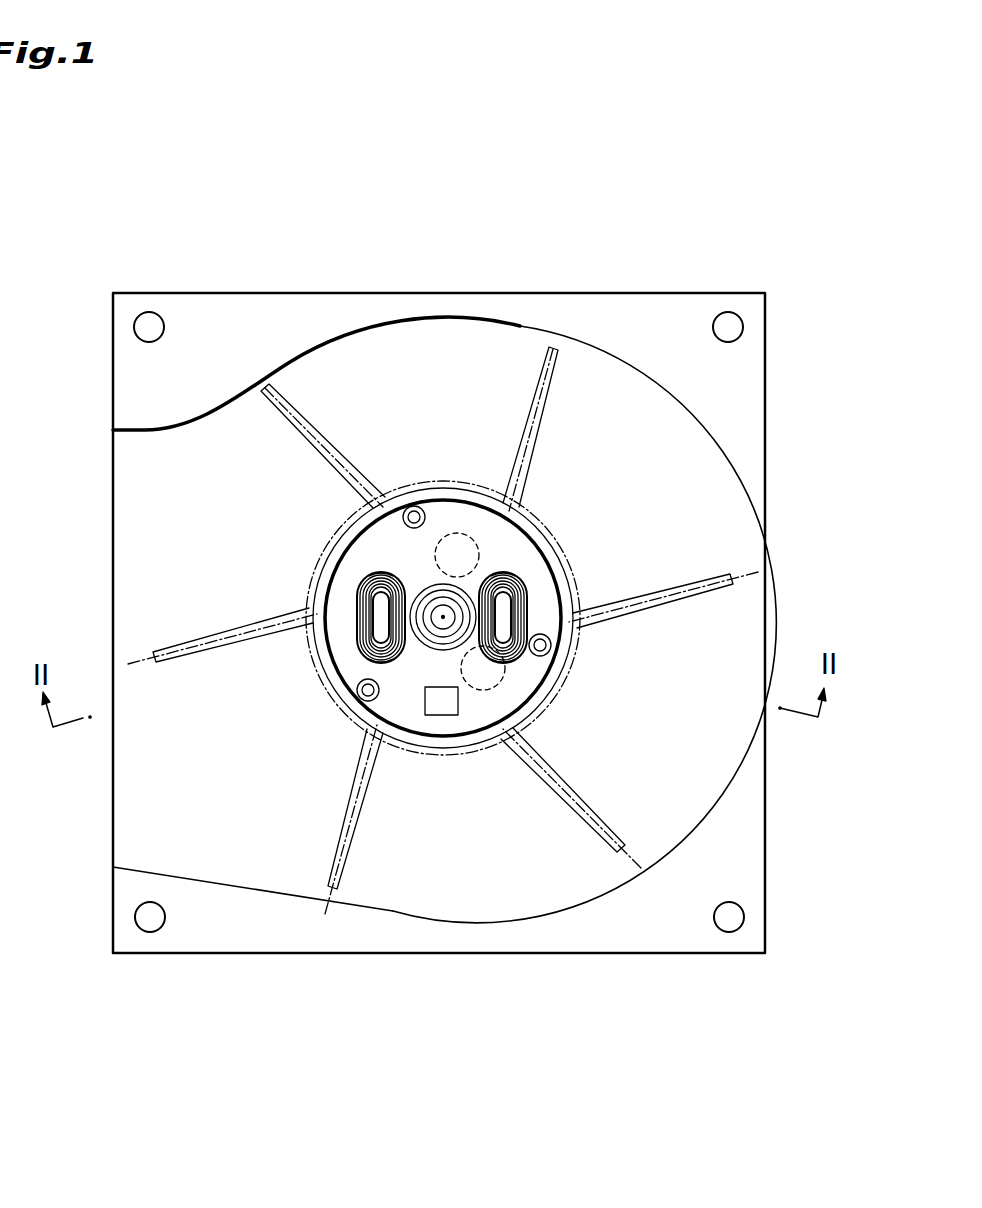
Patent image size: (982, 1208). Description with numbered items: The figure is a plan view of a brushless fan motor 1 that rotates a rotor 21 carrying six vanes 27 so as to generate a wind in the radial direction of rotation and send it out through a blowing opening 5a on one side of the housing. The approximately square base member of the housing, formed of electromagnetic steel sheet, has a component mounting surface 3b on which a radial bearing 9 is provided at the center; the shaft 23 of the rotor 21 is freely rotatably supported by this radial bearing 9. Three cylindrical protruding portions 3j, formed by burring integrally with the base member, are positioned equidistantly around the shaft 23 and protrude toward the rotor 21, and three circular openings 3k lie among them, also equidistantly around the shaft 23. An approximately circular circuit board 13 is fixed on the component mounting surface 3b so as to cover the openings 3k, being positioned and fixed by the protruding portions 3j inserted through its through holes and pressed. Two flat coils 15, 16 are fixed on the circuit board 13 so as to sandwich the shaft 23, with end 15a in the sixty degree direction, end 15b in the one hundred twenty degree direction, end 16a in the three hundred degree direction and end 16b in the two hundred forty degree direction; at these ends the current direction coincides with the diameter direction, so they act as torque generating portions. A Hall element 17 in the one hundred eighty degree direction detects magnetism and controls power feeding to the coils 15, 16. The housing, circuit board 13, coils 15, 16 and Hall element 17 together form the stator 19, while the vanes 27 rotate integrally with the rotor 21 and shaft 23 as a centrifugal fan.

The fan motor 1 is at (723, 202).
The stator 19 is at (776, 438).
The component mounting surface 3b is at (467, 872).
The blowing opening 5a is at (158, 792).
The vanes 27 is at (290, 403).
The rotor 21 is at (550, 542).
The circuit board 13 is at (477, 718).
The radial bearing 9 is at (435, 587).
The shaft 23 is at (443, 616).
The coil 16 is at (345, 597).
The end of coil 16 16a is at (381, 572).
The end of coil 16 16b is at (381, 665).
The coil 15 is at (540, 607).
The end of coil 15 15a is at (505, 573).
The end of coil 15 15b is at (497, 668).
The protruding portions 3j is at (414, 506).
The circular openings 3k is at (478, 545).
The Hall element 17 is at (436, 705).